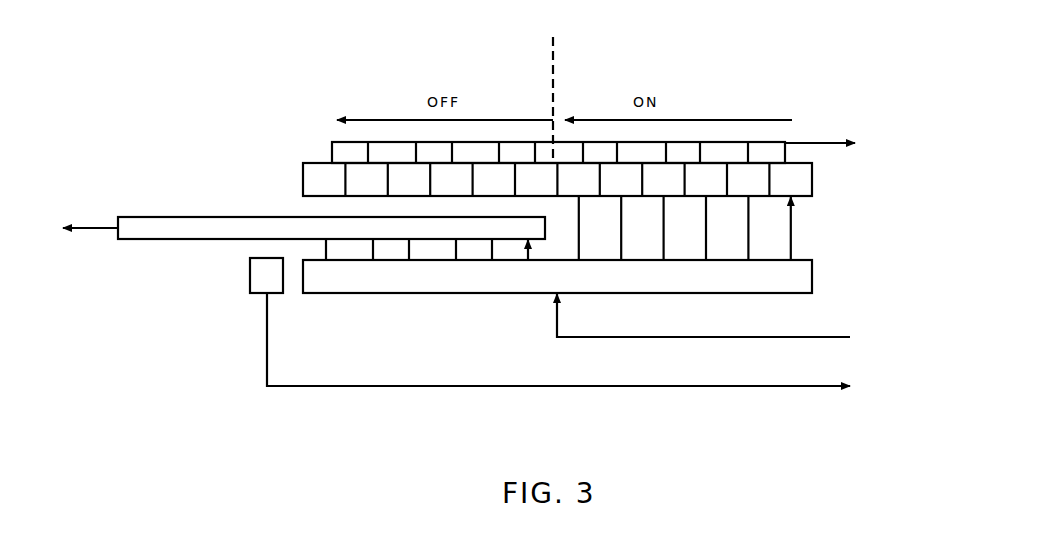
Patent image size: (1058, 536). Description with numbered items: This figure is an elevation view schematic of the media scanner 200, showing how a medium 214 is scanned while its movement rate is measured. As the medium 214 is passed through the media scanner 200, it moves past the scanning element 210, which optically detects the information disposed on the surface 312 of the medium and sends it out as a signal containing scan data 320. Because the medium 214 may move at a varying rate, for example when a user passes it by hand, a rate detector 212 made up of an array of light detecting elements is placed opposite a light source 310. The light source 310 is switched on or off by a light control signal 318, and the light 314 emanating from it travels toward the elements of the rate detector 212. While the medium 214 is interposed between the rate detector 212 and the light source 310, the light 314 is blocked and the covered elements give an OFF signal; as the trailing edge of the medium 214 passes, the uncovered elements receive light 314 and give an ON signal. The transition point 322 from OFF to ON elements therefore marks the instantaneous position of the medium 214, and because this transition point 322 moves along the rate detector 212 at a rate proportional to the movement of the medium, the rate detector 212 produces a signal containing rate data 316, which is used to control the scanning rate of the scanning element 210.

The media scanner 200 is at (226, 105).
The scanning element 210 is at (258, 294).
The rate detector 212 is at (813, 194).
The medium 214 is at (225, 216).
The light source 310 is at (428, 294).
The surface of medium 312 is at (304, 229).
The light 314 is at (792, 227).
The rate data 316 is at (813, 143).
The light control signal 318 is at (827, 337).
The scan data 320 is at (800, 388).
The transition point 322 is at (553, 83).